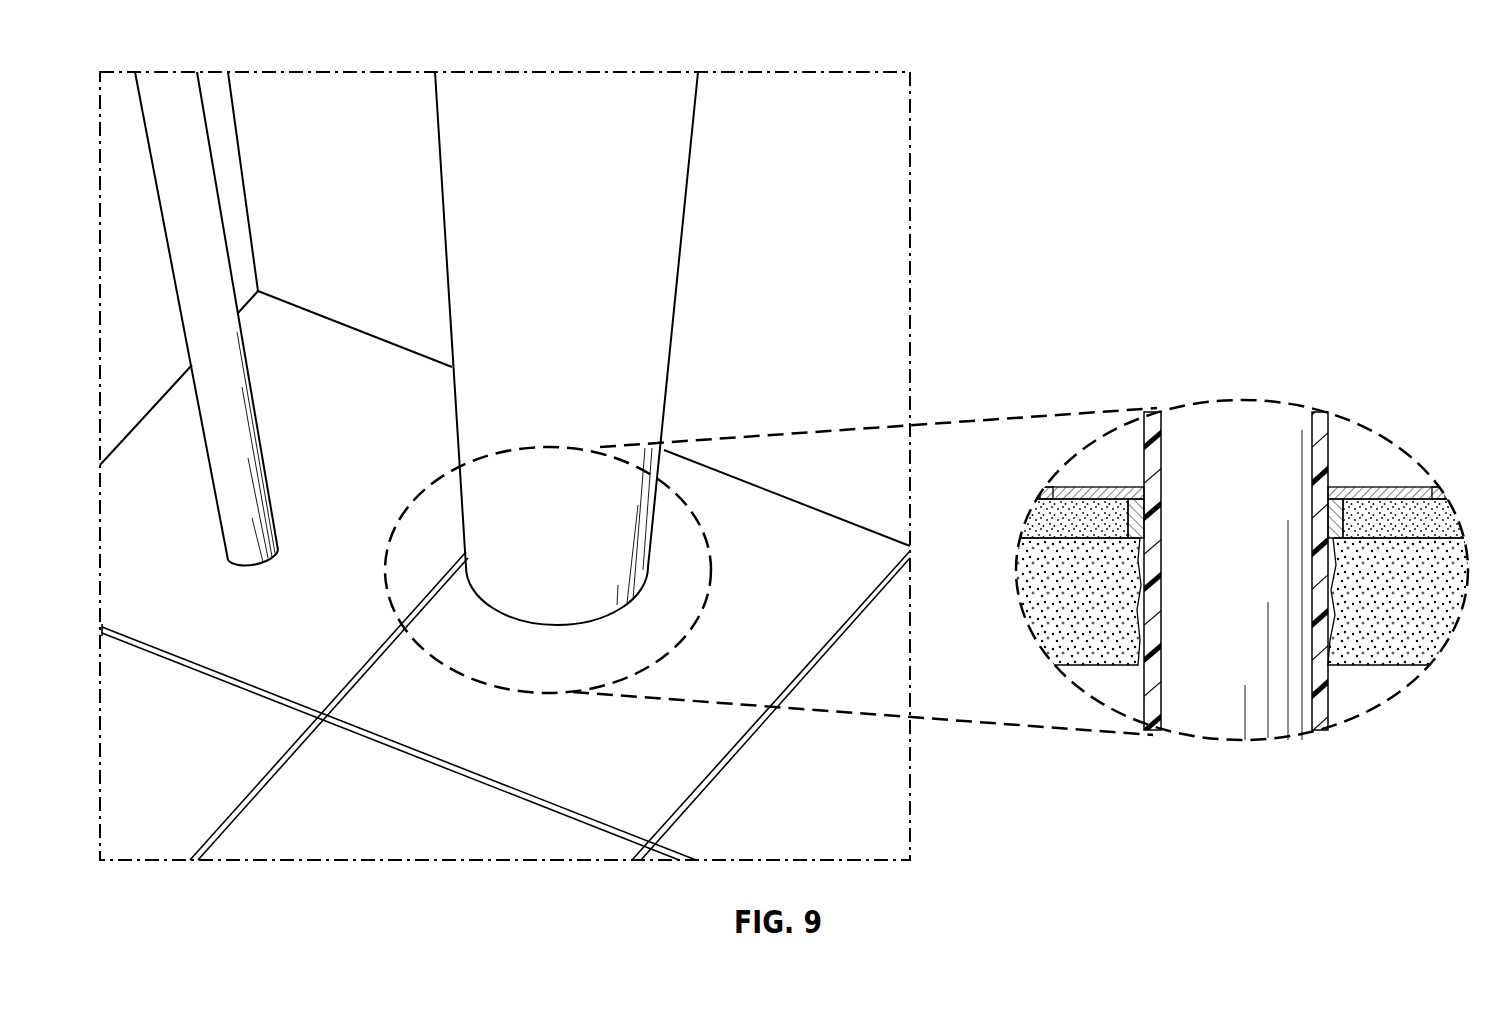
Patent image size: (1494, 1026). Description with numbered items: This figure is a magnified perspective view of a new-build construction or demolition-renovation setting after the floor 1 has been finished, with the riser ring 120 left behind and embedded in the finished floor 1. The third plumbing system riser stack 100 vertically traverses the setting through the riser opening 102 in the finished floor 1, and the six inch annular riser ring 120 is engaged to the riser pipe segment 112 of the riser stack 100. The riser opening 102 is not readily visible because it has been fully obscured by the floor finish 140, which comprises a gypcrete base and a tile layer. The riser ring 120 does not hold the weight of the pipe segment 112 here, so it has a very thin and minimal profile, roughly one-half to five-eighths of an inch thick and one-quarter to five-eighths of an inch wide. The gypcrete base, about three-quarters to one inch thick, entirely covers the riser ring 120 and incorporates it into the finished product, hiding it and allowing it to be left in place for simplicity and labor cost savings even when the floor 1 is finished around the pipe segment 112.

The finished floor 1 is at (851, 835).
The riser stack 100 is at (929, 425).
The riser opening 102 is at (1345, 625).
The riser pipe segment 112 is at (550, 235).
The riser ring 120 is at (1352, 511).
The floor finish 140 is at (328, 358).